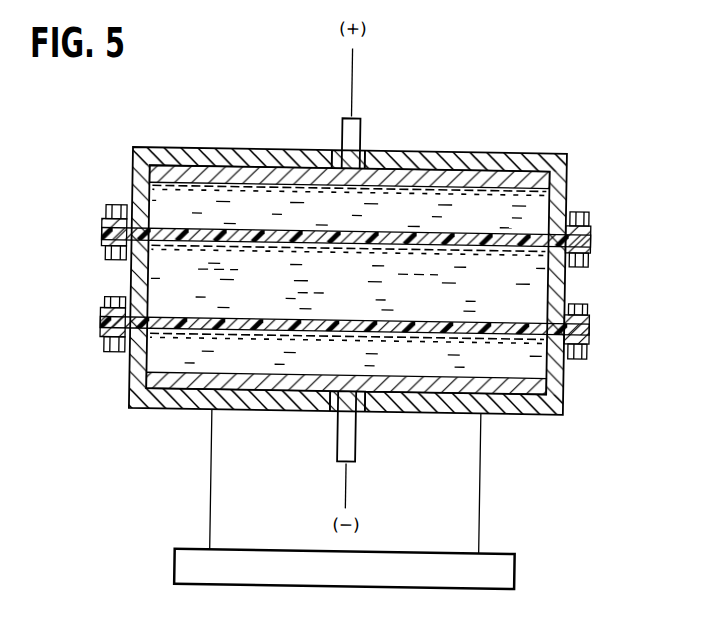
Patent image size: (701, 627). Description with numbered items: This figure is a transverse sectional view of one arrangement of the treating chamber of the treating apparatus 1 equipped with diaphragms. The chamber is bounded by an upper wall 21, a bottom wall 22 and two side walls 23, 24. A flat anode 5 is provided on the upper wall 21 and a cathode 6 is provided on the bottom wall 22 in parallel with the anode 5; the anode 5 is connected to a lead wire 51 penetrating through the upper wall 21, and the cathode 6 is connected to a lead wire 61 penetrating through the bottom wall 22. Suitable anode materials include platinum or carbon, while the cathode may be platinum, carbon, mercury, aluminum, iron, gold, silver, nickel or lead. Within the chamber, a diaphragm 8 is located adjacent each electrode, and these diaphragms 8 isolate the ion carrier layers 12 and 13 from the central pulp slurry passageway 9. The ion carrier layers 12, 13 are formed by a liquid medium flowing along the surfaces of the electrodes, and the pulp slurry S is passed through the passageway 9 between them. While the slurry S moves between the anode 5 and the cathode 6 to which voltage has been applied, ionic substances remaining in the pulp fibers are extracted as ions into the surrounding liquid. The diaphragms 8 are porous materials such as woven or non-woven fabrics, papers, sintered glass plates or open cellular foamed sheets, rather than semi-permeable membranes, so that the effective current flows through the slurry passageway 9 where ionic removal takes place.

The treating apparatus 1 is at (145, 152).
The upper wall 21 is at (189, 156).
The bottom wall 22 is at (278, 400).
The anode 5 is at (432, 178).
The cathode 6 is at (541, 392).
The diaphragm 8 is at (532, 235).
The ion carrier layer 12 is at (162, 207).
The pulp slurry passageway 9 is at (165, 287).
The ion carrier layer 13 is at (162, 337).
The side wall 23 is at (128, 268).
The side wall 24 is at (568, 288).
The lead wire 51 is at (347, 133).
The lead wire 61 is at (350, 432).
The pulp slurry S is at (456, 279).